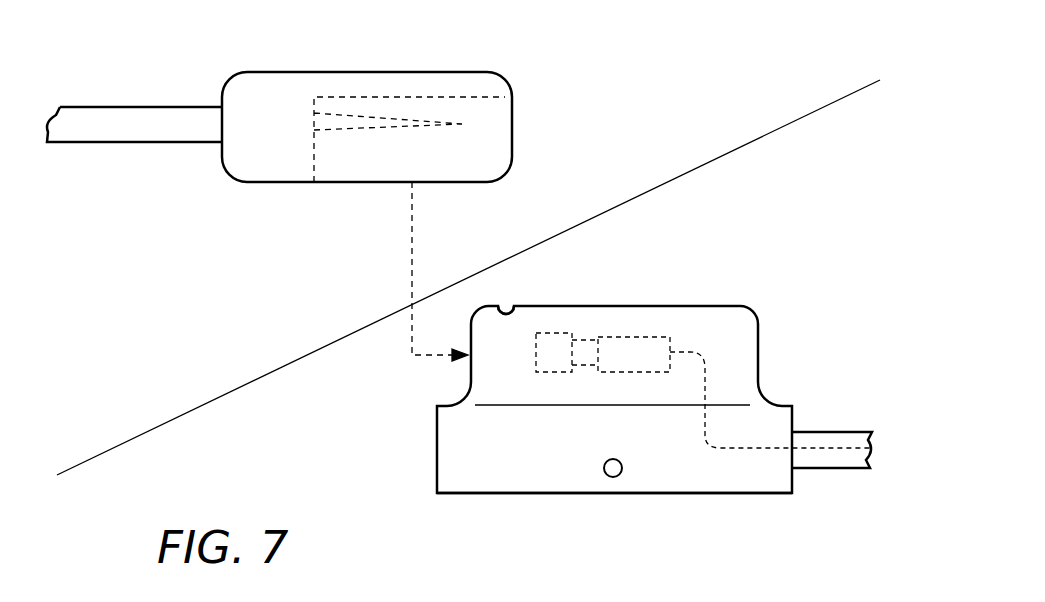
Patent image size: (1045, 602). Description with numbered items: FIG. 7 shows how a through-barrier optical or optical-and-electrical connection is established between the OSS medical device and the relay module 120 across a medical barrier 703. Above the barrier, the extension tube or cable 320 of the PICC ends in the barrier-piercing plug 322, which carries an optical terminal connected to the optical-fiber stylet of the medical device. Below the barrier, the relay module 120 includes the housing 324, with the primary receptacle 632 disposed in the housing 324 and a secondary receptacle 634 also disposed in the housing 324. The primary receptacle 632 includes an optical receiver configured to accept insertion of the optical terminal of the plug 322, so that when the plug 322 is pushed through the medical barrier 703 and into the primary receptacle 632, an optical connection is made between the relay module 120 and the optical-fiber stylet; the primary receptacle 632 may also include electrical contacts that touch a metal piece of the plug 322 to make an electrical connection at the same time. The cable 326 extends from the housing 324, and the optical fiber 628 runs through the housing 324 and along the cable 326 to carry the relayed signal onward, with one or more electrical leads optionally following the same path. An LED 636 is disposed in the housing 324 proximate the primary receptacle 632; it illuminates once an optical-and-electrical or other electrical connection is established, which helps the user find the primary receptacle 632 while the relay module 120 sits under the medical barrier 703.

The relay module 120 is at (803, 325).
The extension tube or cable 320 is at (140, 106).
The barrier-piercing plug 322 is at (362, 72).
The housing 324 is at (437, 493).
The cable 326 is at (838, 470).
The optical fiber 628 is at (737, 448).
The primary receptacle 632 is at (598, 330).
The secondary receptacle 634 is at (615, 477).
The LED 636 is at (506, 304).
The medical barrier 703 is at (785, 125).